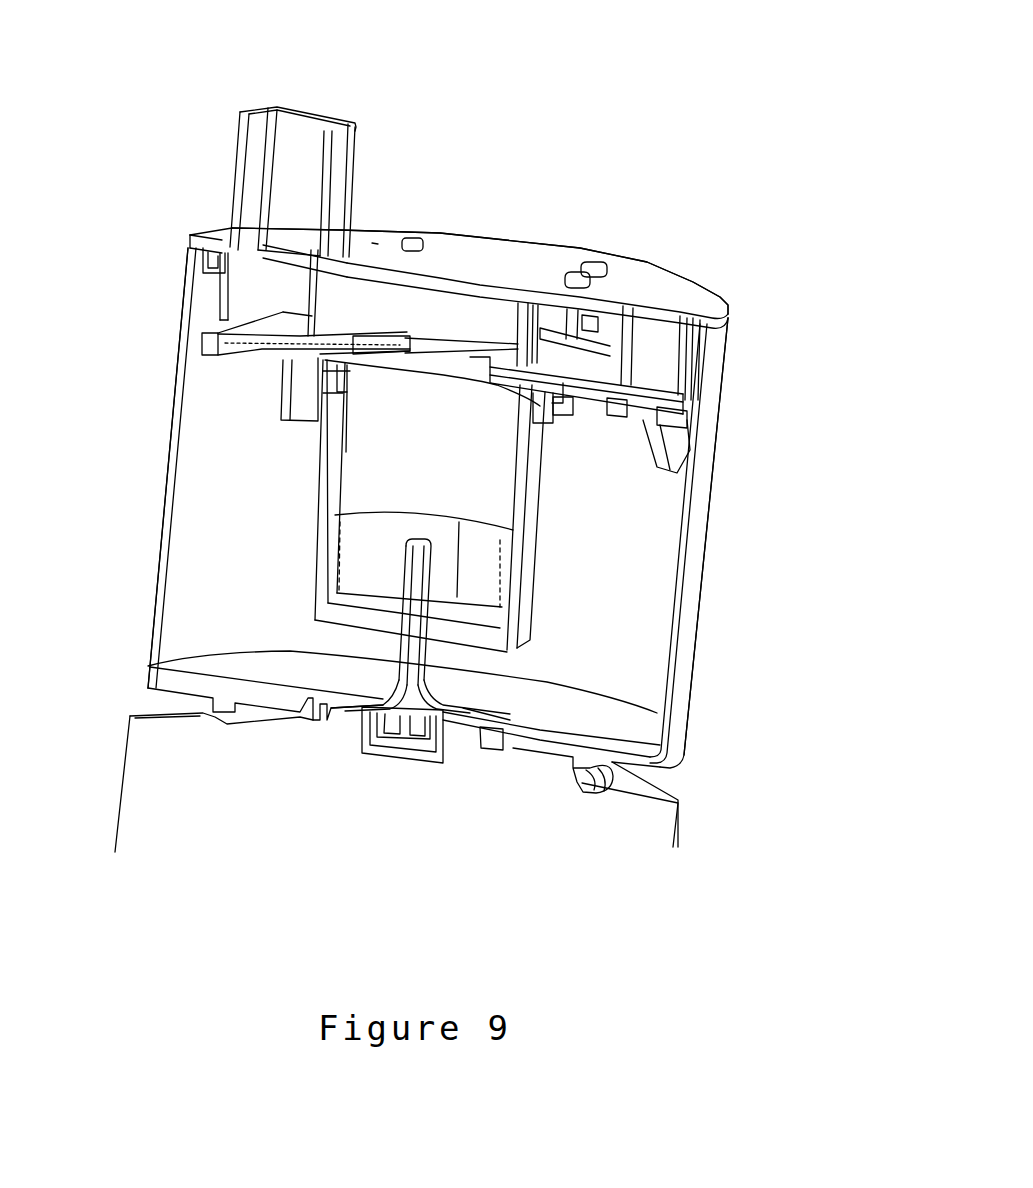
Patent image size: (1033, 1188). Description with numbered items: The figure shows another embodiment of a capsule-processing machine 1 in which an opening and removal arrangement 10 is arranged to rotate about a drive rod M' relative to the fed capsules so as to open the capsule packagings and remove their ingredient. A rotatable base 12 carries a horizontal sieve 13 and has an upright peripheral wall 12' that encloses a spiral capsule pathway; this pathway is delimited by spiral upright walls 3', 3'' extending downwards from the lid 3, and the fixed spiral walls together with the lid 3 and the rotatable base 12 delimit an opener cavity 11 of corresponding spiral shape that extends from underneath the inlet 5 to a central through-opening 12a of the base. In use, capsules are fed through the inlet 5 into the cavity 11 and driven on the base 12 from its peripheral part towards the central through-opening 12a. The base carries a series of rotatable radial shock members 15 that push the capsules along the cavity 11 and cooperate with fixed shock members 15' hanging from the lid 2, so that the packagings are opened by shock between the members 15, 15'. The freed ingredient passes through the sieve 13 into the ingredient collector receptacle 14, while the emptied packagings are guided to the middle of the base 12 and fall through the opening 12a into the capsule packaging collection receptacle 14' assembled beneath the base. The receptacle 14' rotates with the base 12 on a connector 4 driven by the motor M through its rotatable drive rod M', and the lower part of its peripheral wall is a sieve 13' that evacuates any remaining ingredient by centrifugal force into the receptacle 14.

The machine 1 is at (167, 90).
The lid 2 is at (680, 673).
The lid 3 is at (459, 291).
The spiral upright wall 3' is at (227, 336).
The spiral upright wall 3'' is at (358, 251).
The connector 4 is at (400, 678).
The inlet 5 is at (297, 160).
The opening and removal arrangement 10 is at (746, 271).
The opener cavity 11 is at (270, 296).
The rotatable base 12 is at (546, 393).
The upright peripheral wall 12' is at (251, 321).
The central through-opening 12a is at (437, 380).
The horizontal sieve 13 is at (611, 447).
The sieve 13' is at (430, 506).
The ingredient collector receptacle 14 is at (562, 769).
The capsule packaging collection receptacle 14' is at (536, 559).
The rotatable radial shock member 15 is at (366, 394).
The fixed shock member 15' is at (638, 264).
The motor M is at (214, 782).
The drive rod M' is at (432, 778).